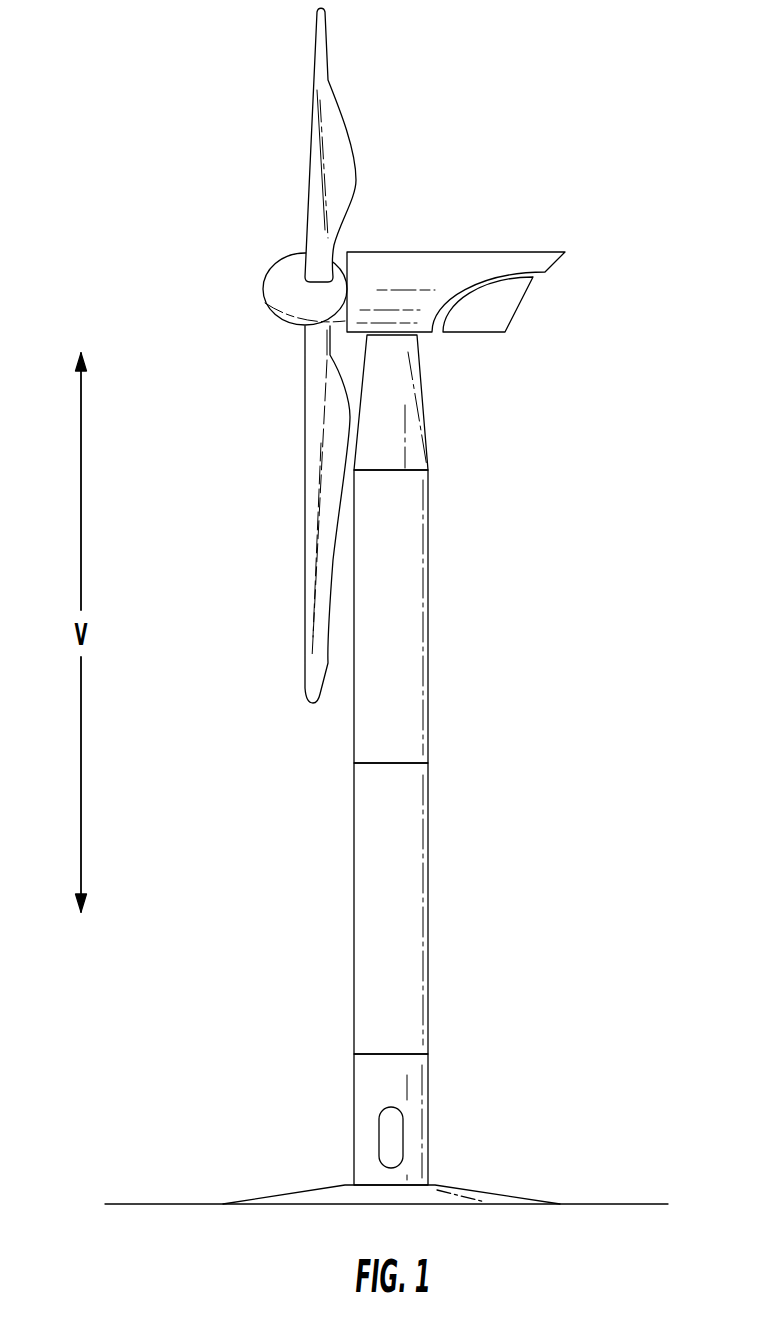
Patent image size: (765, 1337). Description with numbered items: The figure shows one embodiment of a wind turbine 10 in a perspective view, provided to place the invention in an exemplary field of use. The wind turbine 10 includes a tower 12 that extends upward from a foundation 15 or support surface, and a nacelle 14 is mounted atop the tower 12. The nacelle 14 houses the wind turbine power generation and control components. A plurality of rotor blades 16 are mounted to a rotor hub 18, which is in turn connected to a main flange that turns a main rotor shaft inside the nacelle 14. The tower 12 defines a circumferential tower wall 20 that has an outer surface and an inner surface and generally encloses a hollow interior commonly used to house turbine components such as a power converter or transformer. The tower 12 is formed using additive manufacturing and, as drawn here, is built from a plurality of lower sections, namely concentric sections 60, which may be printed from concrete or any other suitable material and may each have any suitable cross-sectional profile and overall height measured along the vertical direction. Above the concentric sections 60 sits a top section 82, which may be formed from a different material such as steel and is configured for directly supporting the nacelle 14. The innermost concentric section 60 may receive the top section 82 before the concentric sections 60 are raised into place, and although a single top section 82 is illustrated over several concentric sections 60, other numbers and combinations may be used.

The wind turbine 10 is at (215, 140).
The tower 12 is at (354, 882).
The nacelle 14 is at (445, 265).
The foundation 15 is at (168, 1203).
The rotor blades 16 is at (315, 123).
The rotor hub 18 is at (278, 288).
The circumferential tower wall 20 is at (353, 1068).
The concentric sections 60 is at (428, 740).
The top section 82 is at (433, 338).